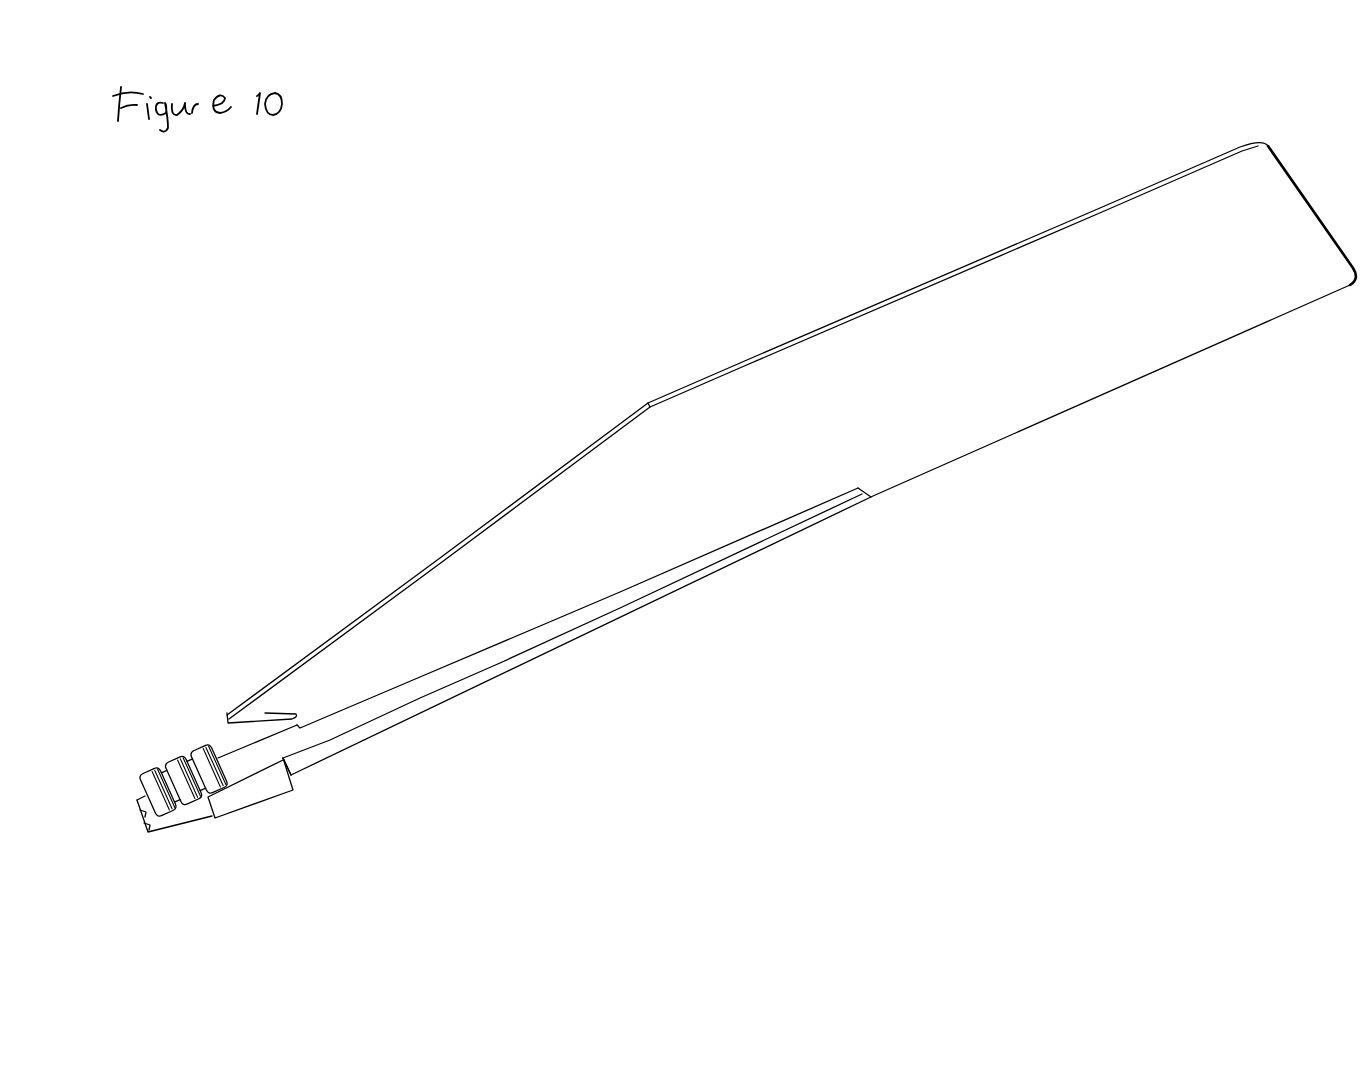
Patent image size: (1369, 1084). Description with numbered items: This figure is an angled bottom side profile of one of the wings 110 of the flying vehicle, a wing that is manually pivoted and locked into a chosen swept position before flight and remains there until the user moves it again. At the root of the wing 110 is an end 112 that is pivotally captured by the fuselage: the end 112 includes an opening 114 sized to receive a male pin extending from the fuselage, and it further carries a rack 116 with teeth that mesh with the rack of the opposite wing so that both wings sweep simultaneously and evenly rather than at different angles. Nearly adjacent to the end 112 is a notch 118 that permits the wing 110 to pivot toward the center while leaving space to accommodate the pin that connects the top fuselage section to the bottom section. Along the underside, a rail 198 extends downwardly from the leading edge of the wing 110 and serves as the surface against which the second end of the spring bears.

The wing 110 is at (838, 345).
The notch 118 is at (262, 722).
The rack 116 is at (156, 766).
The end 112 is at (182, 830).
The opening 114 is at (205, 814).
The rail 198 is at (295, 780).